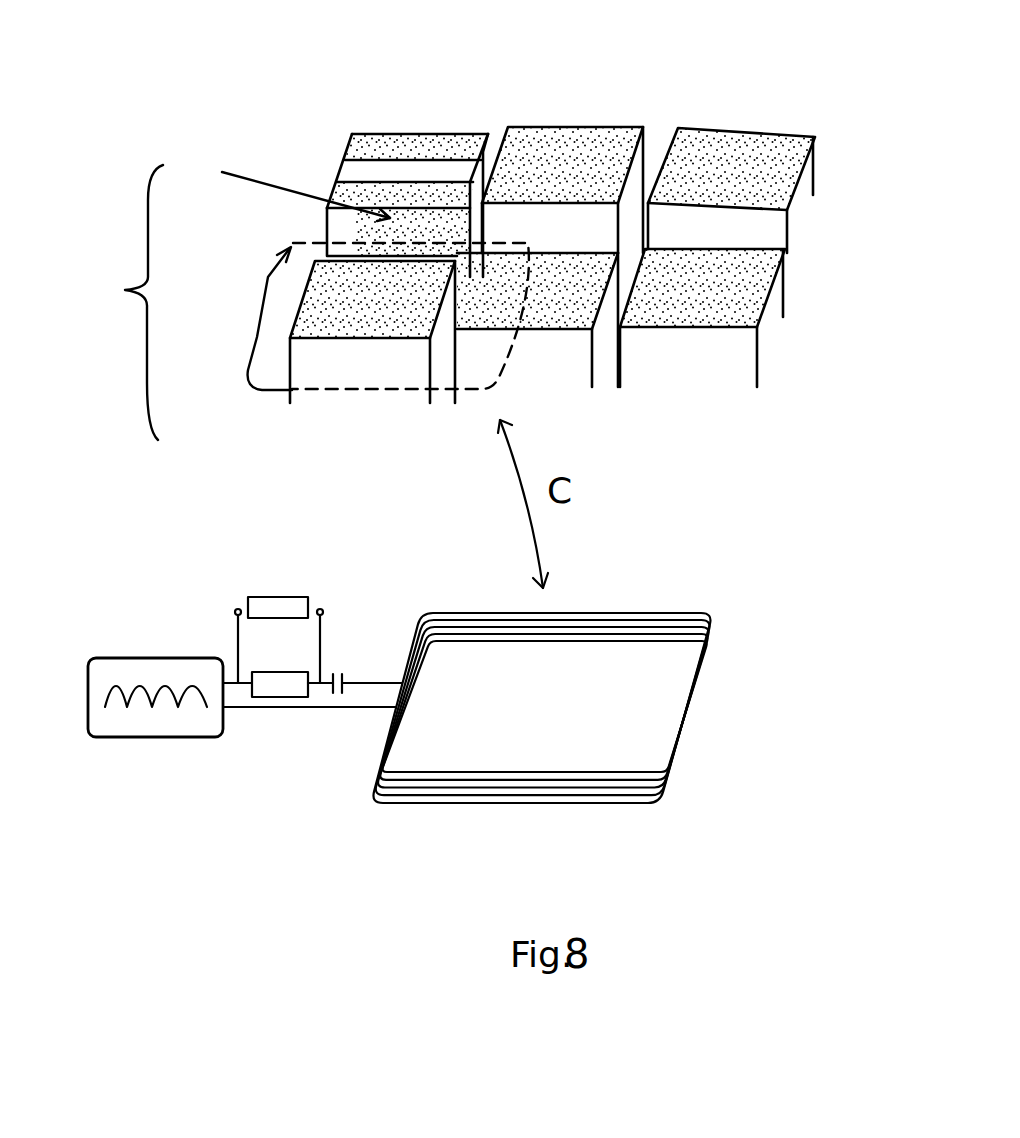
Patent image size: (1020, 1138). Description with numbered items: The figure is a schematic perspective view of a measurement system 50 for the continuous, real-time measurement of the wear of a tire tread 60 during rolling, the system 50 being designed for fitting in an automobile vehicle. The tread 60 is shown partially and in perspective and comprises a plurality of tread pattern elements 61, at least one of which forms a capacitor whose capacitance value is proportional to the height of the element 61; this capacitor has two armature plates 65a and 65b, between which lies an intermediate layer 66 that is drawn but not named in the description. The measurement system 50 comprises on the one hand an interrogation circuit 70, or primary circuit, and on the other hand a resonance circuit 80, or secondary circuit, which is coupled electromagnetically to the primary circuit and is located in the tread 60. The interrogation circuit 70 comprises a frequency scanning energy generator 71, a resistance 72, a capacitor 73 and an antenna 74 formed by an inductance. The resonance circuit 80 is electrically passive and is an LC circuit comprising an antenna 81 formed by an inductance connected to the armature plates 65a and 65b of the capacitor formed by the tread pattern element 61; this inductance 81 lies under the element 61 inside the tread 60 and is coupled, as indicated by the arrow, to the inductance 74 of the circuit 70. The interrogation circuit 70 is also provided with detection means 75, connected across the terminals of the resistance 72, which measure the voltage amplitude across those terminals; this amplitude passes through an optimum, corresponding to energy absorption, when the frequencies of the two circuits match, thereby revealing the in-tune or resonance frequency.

The measurement system 50 is at (865, 595).
The tire tread 60 is at (810, 233).
The tread pattern element 61 is at (435, 122).
The armature plate 65a is at (364, 198).
The armature plate 65b is at (460, 147).
The intermediate layer 66 is at (348, 177).
The interrogation circuit 70 is at (290, 747).
The frequency scanning energy generator 71 is at (140, 740).
The resistance 72 is at (267, 697).
The capacitor 73 is at (343, 672).
The antenna 74 is at (602, 610).
The detection means 75 is at (282, 592).
The resonance circuit 80 is at (230, 302).
The antenna 81 is at (245, 385).